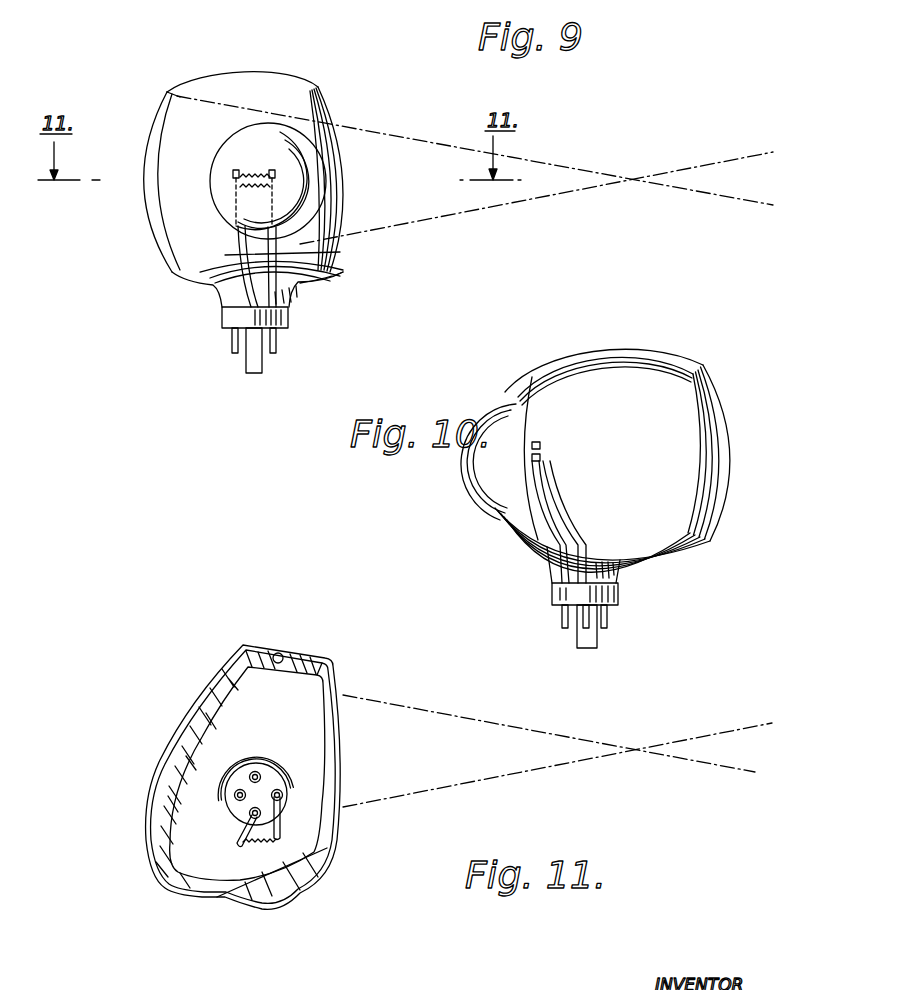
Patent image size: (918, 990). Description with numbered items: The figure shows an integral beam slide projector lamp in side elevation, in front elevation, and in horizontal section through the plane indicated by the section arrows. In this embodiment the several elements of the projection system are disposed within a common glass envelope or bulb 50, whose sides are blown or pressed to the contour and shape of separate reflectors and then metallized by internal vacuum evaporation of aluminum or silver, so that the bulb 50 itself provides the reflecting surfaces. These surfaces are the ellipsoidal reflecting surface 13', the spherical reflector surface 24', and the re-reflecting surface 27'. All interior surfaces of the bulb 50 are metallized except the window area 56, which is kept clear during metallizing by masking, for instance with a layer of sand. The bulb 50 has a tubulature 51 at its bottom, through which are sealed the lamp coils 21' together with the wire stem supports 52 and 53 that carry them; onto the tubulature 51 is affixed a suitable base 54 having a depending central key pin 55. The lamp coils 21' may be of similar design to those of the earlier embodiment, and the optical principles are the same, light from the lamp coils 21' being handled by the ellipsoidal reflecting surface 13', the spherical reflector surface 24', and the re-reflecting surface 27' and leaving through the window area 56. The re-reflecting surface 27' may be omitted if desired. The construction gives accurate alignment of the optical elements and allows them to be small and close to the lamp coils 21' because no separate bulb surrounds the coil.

In FIG. 9, the glass envelope or bulb 50 is at (289, 61).
In FIG. 10, the glass envelope or bulb 50 is at (672, 341).
In FIG. 11, the glass envelope or bulb 50 is at (321, 637).
In FIG. 9, the ellipsoidal reflecting surface 13' is at (140, 182).
In FIG. 10, the ellipsoidal reflecting surface 13' is at (589, 426).
In FIG. 11, the ellipsoidal reflecting surface 13' is at (221, 783).
In FIG. 9, the spherical reflector surface 24' is at (295, 163).
In FIG. 10, the spherical reflector surface 24' is at (496, 437).
In FIG. 11, the spherical reflector surface 24' is at (272, 905).
In FIG. 9, the lamp coils 21' is at (263, 180).
In FIG. 10, the lamp coils 21' is at (562, 436).
In FIG. 11, the lamp coils 21' is at (265, 809).
In FIG. 9, the window area 56 is at (340, 166).
In FIG. 10, the window area 56 is at (660, 492).
In FIG. 11, the window area 56 is at (343, 737).
In FIG. 10, the re-reflecting surface 27' is at (733, 453).
In FIG. 11, the re-reflecting surface 27' is at (290, 632).
In FIG. 9, the wire stem support 53 is at (328, 258).
In FIG. 10, the wire stem support 53 is at (618, 578).
In FIG. 11, the wire stem support 53 is at (280, 808).
In FIG. 9, the wire stem support 52 is at (230, 261).
In FIG. 10, the wire stem support 52 is at (560, 567).
In FIG. 11, the wire stem support 52 is at (241, 824).
In FIG. 9, the tubulature 51 is at (227, 294).
In FIG. 9, the base 54 is at (290, 318).
In FIG. 10, the base 54 is at (585, 605).
In FIG. 9, the central key pin 55 is at (262, 366).
In FIG. 10, the central key pin 55 is at (598, 641).